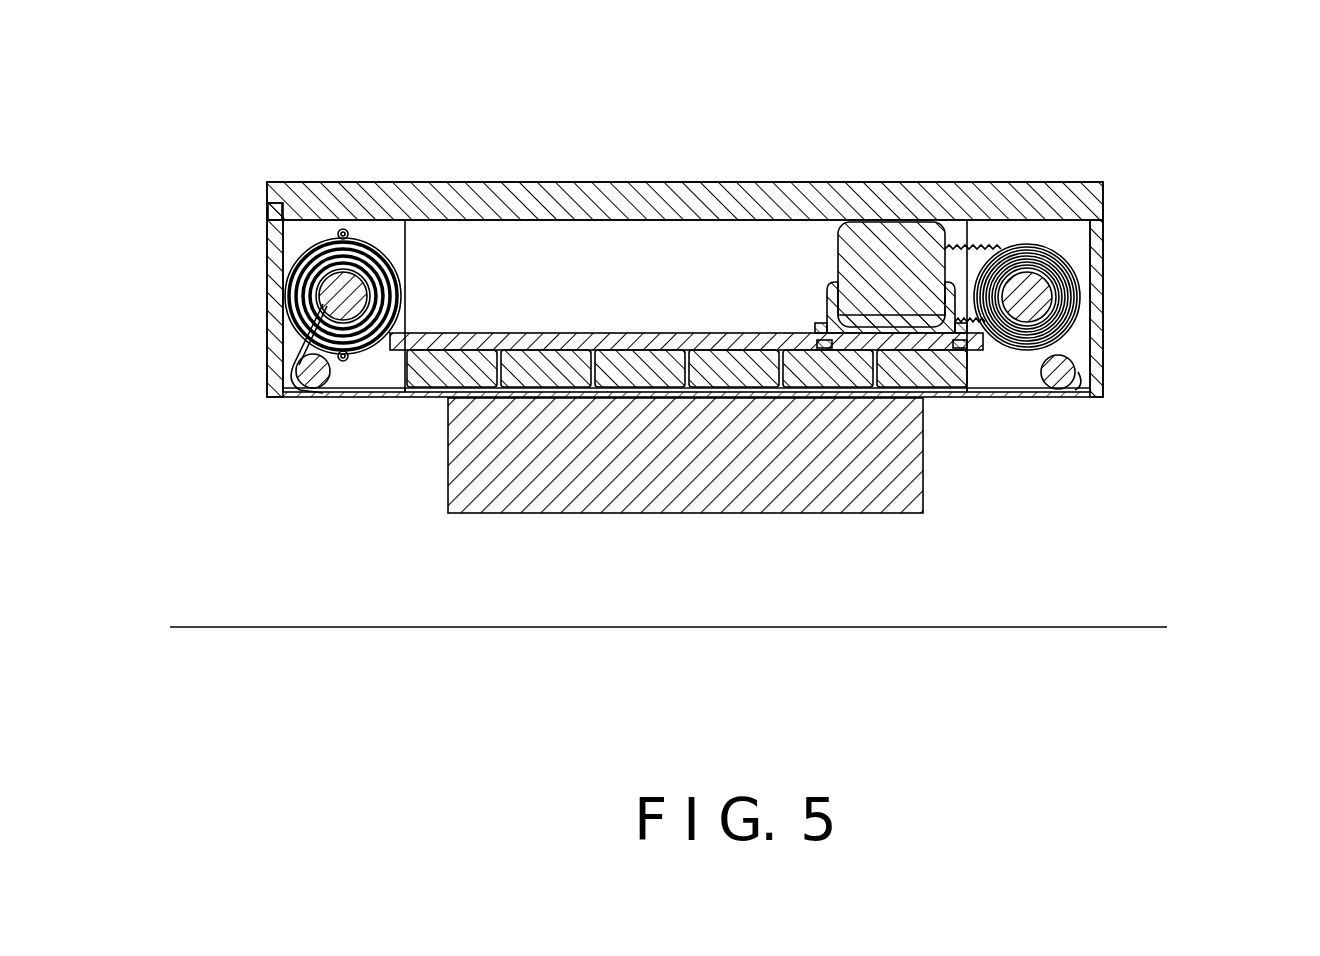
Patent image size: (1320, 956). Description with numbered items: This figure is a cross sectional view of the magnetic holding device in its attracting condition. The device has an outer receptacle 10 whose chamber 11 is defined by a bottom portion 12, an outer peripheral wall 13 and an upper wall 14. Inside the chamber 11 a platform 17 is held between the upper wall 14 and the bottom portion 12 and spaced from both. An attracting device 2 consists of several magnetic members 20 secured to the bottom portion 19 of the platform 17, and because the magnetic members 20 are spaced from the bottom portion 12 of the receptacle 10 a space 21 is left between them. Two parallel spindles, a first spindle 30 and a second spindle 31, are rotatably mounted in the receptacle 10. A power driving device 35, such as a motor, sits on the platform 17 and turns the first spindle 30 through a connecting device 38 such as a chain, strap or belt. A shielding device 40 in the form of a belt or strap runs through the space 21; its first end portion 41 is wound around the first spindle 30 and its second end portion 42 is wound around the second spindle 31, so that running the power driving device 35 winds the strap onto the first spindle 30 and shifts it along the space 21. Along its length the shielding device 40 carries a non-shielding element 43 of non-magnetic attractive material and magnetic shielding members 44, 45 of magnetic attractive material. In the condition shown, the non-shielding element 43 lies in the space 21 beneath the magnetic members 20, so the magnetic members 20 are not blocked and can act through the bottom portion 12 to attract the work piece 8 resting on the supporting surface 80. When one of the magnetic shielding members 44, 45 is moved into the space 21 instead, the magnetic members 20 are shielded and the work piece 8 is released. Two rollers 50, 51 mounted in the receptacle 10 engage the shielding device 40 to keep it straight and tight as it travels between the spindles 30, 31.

The attracting device 2 is at (433, 350).
The work piece 8 is at (636, 490).
The receptacle 10 is at (1103, 352).
The chamber 11 is at (296, 236).
The bottom portion 12 is at (1085, 397).
The outer peripheral wall 13 is at (277, 348).
The upper wall 14 is at (1052, 192).
The platform 17 is at (748, 333).
The bottom portion of the platform 19 is at (683, 353).
The magnetic members 20 is at (615, 350).
The space 21 is at (958, 388).
The first spindle 30 is at (1103, 300).
The second spindle 31 is at (335, 297).
The power driving device 35 is at (890, 250).
The connecting device 38 is at (985, 249).
The shielding device 40 is at (1080, 335).
The first end portion 41 is at (1080, 237).
The second end portion 42 is at (310, 275).
The non-shielding element 43 is at (432, 392).
The magnetic shielding member 44 is at (1100, 370).
The magnetic shielding member 45 is at (295, 370).
The roller 50 is at (1060, 385).
The roller 51 is at (315, 372).
The supporting surface 80 is at (1062, 668).